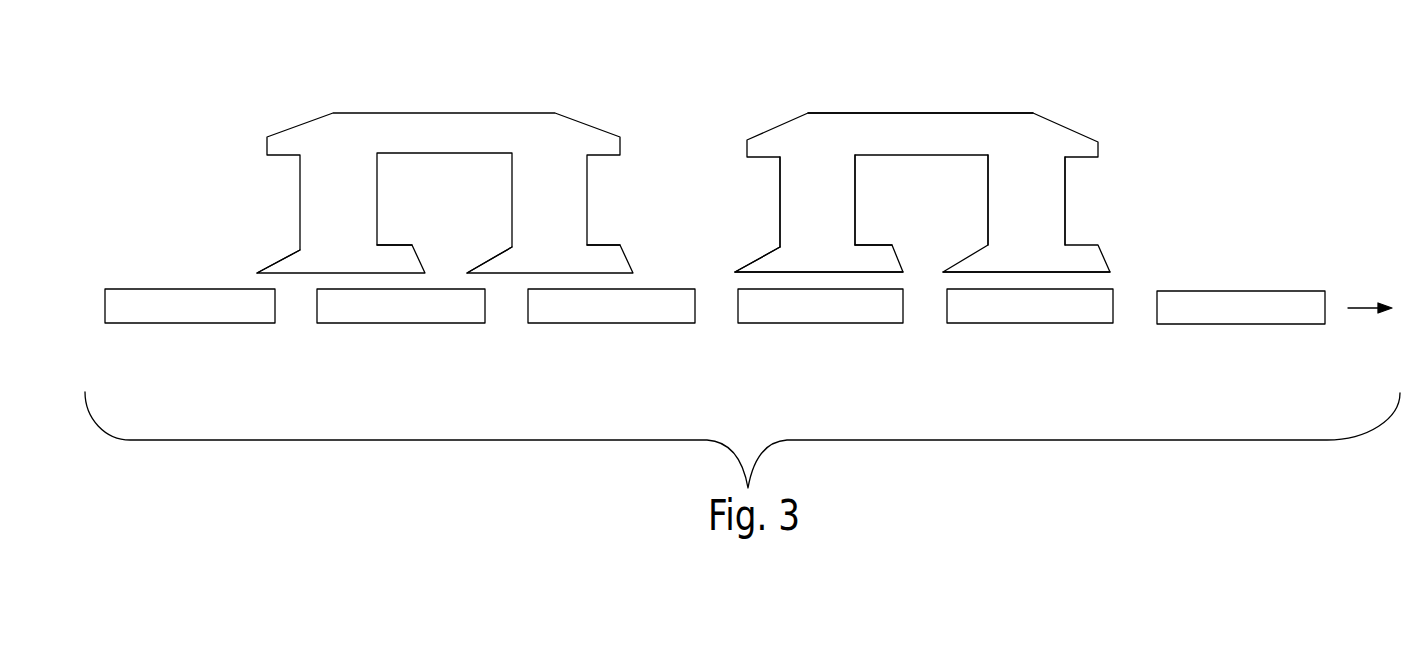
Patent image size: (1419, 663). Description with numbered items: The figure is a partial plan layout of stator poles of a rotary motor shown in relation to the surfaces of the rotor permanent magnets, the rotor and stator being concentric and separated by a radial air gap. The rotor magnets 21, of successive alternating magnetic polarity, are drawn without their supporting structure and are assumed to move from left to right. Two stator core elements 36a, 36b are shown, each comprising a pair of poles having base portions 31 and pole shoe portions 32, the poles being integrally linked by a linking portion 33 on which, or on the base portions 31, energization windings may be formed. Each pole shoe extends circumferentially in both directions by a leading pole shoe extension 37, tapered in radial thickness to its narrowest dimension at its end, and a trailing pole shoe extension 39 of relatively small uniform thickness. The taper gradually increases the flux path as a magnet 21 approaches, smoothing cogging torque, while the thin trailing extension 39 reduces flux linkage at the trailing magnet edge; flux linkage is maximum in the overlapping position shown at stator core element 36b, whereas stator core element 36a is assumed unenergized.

The rotor magnets 21 is at (248, 323).
The base portions 31 is at (805, 200).
The pole shoe portions 32 is at (805, 269).
The linking portion 33 is at (915, 145).
The stator core element 36a is at (413, 113).
The stator core element 36b is at (882, 113).
The pole shoe extension 37 is at (285, 256).
The pole shoe extension 39 is at (397, 244).